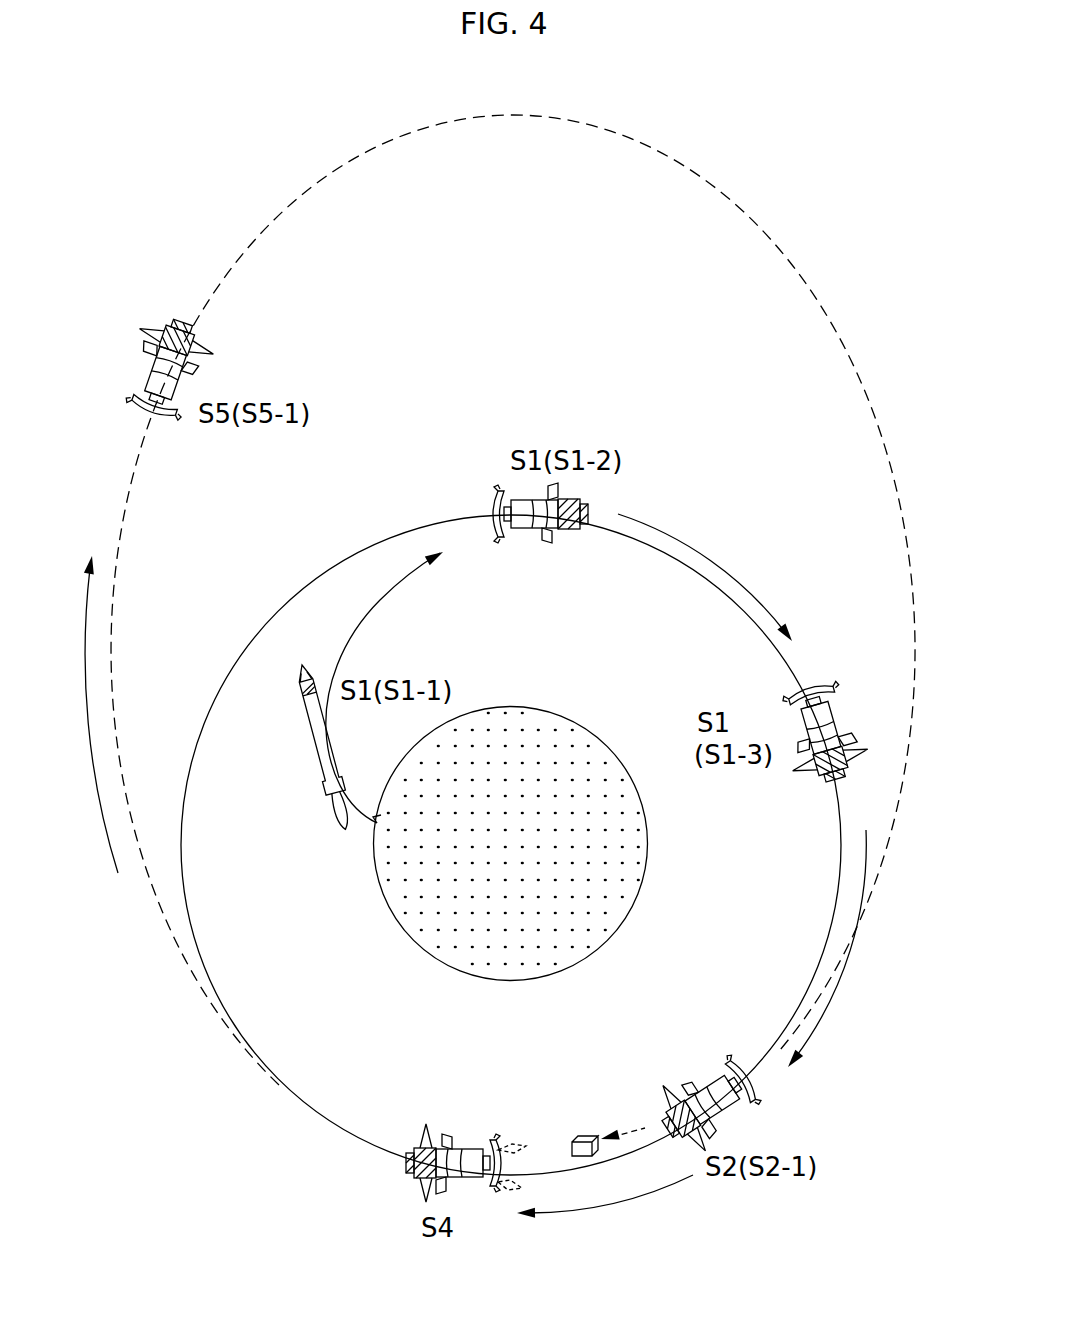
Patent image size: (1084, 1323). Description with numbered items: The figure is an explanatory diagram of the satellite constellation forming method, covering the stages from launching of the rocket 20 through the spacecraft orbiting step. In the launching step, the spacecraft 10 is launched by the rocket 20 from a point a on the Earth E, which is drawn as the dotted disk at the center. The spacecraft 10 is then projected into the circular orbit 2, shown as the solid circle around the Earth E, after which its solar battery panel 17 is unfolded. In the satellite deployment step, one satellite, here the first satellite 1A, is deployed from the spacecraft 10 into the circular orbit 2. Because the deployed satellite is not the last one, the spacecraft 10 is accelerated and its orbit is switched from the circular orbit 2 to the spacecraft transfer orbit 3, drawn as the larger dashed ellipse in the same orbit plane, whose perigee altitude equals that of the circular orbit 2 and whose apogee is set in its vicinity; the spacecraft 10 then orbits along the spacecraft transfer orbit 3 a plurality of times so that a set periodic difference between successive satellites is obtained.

The spacecraft transfer orbit 3 is at (300, 196).
The circular orbit 2 is at (360, 547).
The Earth E is at (524, 863).
The point a is at (376, 826).
The rocket 20 is at (300, 754).
The spacecraft 10 is at (150, 309).
The solar battery panel 17 is at (800, 765).
The first satellite 1A is at (584, 1132).